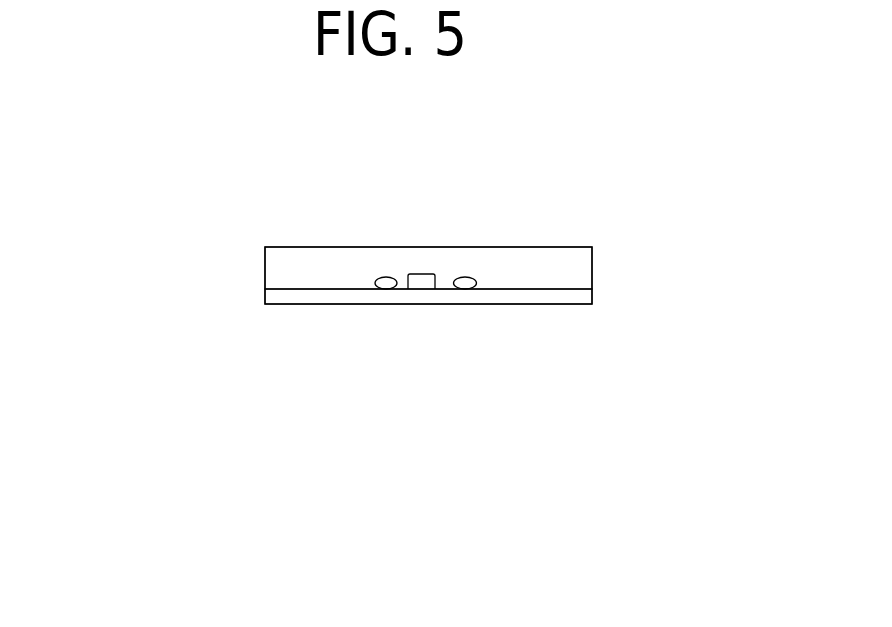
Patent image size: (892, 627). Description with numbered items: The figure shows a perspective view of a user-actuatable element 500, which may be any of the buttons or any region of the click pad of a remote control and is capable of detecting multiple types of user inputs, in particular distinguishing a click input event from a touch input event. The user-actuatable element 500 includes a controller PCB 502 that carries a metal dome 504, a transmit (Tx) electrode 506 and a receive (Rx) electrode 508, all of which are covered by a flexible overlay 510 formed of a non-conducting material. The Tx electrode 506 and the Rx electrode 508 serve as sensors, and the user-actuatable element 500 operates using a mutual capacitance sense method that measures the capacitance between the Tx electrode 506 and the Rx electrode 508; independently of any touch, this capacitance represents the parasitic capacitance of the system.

The user-actuatable element 500 is at (208, 209).
The controller PCB 502 is at (593, 304).
The metal dome 504 is at (425, 275).
The transmit (Tx) electrode 506 is at (375, 289).
The receive (Rx) electrode 508 is at (470, 289).
The flexible overlay 510 is at (592, 276).